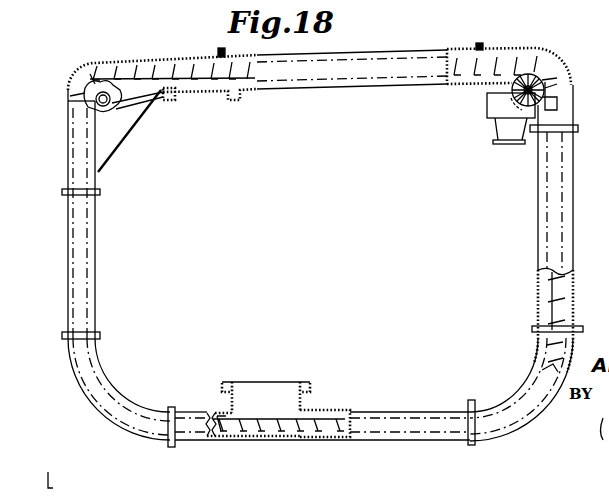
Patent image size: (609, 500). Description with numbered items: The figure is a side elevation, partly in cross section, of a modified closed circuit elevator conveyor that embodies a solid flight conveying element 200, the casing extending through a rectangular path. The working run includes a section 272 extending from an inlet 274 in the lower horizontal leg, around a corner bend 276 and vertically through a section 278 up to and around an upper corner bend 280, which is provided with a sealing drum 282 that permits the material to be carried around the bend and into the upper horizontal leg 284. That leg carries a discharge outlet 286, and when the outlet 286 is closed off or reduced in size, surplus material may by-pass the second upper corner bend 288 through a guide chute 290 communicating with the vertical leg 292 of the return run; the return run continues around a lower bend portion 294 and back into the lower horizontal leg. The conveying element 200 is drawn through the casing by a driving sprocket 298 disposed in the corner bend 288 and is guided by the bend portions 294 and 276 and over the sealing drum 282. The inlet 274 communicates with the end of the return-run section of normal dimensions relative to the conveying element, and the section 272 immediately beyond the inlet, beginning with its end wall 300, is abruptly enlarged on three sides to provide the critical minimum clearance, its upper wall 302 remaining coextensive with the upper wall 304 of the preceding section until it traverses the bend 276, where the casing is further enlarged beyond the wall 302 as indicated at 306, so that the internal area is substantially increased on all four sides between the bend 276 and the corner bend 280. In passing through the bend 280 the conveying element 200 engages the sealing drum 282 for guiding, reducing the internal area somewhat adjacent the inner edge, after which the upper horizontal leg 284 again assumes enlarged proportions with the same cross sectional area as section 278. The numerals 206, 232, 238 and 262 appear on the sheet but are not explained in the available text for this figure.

The solid flight conveying element 200 is at (233, 47).
The flexible coupling 206 is at (198, 413).
The drive unit 232 is at (75, 7).
The support 238 is at (178, 7).
The corner duct section 262 is at (537, 0).
The section 272 is at (313, 433).
The inlet 274 is at (280, 382).
The corner bend 276 is at (513, 427).
The section 278 is at (540, 228).
The upper corner bend 280 is at (533, 78).
The sealing drum 282 is at (565, 72).
The upper horizontal leg 284 is at (372, 50).
The discharge outlet 286 is at (213, 103).
The second upper corner bend 288 is at (75, 80).
The guide chute 290 is at (120, 143).
The vertical leg 292 is at (95, 258).
The lower bend portion 294 is at (127, 428).
The driving sprocket 298 is at (133, 112).
The end wall 300 is at (307, 408).
The upper wall 302 is at (337, 410).
The upper wall 304 is at (217, 418).
The enlargement 306 is at (540, 312).